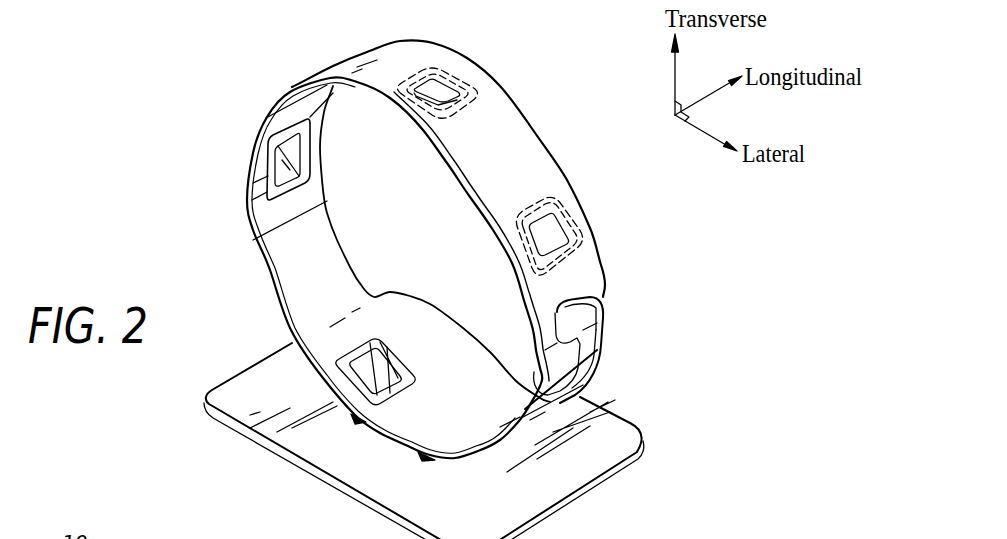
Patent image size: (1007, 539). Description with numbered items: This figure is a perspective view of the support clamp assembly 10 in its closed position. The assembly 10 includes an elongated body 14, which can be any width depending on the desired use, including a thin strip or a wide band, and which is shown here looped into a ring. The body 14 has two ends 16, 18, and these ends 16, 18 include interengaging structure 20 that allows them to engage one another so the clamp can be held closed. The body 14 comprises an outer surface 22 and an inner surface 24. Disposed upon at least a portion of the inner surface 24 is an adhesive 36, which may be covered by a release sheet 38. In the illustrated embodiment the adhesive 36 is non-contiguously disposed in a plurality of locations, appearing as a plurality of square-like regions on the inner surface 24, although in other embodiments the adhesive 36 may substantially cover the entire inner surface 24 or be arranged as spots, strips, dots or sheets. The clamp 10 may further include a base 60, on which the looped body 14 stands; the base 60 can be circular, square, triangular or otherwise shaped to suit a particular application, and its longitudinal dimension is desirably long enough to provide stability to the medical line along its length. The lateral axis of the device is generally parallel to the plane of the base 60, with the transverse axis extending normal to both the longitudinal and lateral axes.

The support clamp assembly 10 is at (186, 126).
The elongated body 14 is at (350, 79).
The end 16 is at (541, 303).
The end 18 is at (603, 343).
The interengaging structure 20 is at (603, 304).
The outer surface 22 is at (509, 121).
The inner surface 24 is at (288, 281).
The adhesive 36 is at (298, 162).
The release sheet 38 is at (250, 176).
The base 60 is at (633, 437).